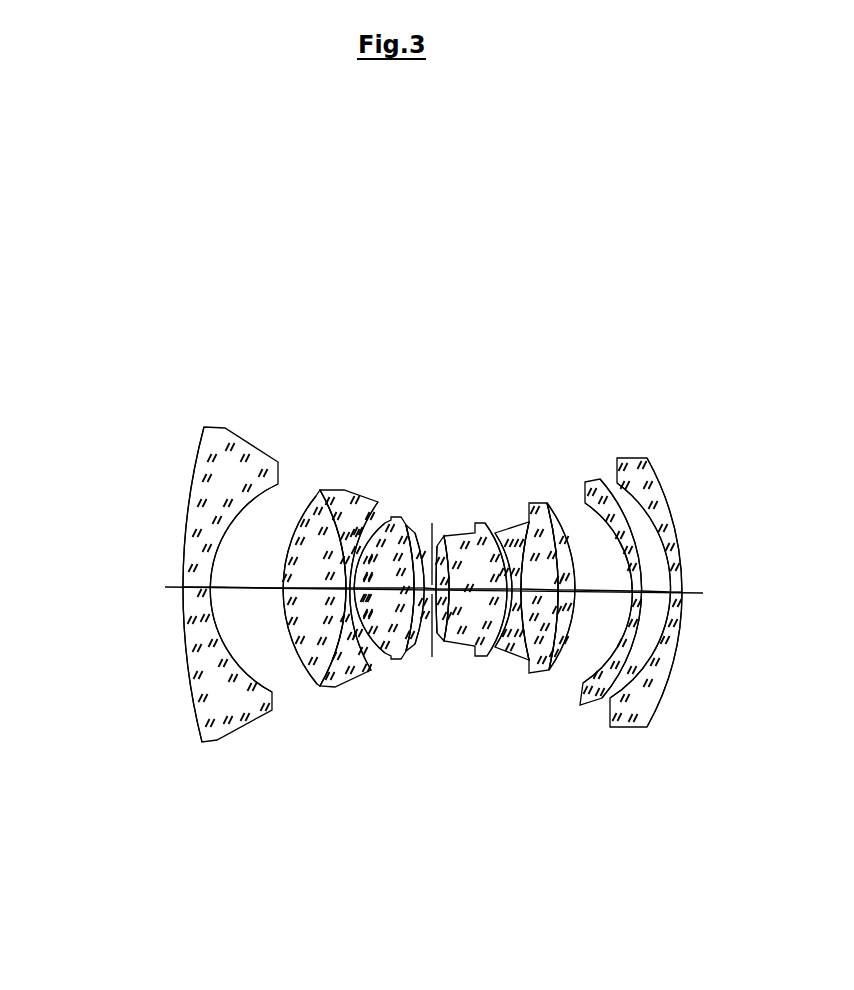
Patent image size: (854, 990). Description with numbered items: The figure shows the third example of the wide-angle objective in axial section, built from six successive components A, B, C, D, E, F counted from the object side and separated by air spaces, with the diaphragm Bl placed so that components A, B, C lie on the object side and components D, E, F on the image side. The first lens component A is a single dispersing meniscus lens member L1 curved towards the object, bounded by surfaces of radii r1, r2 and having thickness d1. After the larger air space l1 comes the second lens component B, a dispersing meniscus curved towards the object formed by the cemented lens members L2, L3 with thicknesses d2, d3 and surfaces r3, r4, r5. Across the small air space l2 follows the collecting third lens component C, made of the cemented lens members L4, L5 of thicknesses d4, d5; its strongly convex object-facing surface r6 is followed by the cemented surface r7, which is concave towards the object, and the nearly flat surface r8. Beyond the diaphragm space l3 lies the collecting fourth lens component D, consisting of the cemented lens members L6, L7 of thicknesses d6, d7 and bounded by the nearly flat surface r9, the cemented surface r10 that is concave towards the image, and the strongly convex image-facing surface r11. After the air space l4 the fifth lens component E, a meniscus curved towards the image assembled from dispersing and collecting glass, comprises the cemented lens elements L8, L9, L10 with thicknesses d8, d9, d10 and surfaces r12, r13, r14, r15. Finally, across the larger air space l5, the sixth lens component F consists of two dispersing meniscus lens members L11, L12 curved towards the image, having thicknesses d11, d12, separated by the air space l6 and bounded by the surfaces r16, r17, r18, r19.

The first lens component A is at (133, 132).
The second lens component B is at (258, 130).
The third lens component C is at (367, 132).
The fourth lens component D is at (473, 134).
The fifth lens component E is at (620, 136).
The sixth lens component F is at (760, 139).
The diaphragm Bl is at (437, 522).
The dispersing meniscus lens member L1 is at (133, 209).
The lens member L2 is at (203, 210).
The lens member L3 is at (238, 210).
The lens member L4 is at (312, 211).
The lens member L5 is at (343, 212).
The lens member L6 is at (418, 213).
The lens member L7 is at (452, 213).
The lens element L8 is at (523, 214).
The lens element L9 is at (558, 214).
The lens element L10 is at (594, 215).
The lens member L11 is at (670, 215).
The lens member L12 is at (742, 216).
The lens thickness d1 is at (203, 588).
The lens thickness d2 is at (315, 588).
The lens thickness d3 is at (350, 588).
The lens thickness d4 is at (387, 588).
The lens thickness d5 is at (420, 588).
The lens thickness d6 is at (441, 589).
The lens thickness d7 is at (476, 589).
The lens thickness d8 is at (522, 589).
The lens thickness d9 is at (546, 590).
The lens thickness d10 is at (575, 590).
The lens thickness d11 is at (639, 591).
The lens thickness d12 is at (680, 591).
The air space l1 is at (258, 588).
The air space l2 is at (357, 588).
The air space l3 is at (430, 589).
The air space l4 is at (510, 589).
The air space l5 is at (606, 590).
The air space l6 is at (660, 591).
The radius of curvature r1 is at (192, 705).
The radius of curvature r2 is at (216, 740).
The radius of curvature r3 is at (298, 668).
The radius of curvature r4 is at (334, 685).
The radius of curvature r5 is at (350, 680).
The radius of curvature r6 is at (379, 658).
The radius of curvature r7 is at (399, 657).
The radius of curvature r8 is at (420, 650).
The radius of curvature r9 is at (424, 645).
The radius of curvature r10 is at (441, 638).
The radius of curvature r11 is at (491, 657).
The radius of curvature r12 is at (505, 648).
The radius of curvature r13 is at (520, 658).
The radius of curvature r14 is at (552, 672).
The radius of curvature r15 is at (562, 660).
The radius of curvature r16 is at (608, 668).
The radius of curvature r17 is at (624, 680).
The radius of curvature r18 is at (643, 690).
The radius of curvature r19 is at (659, 700).